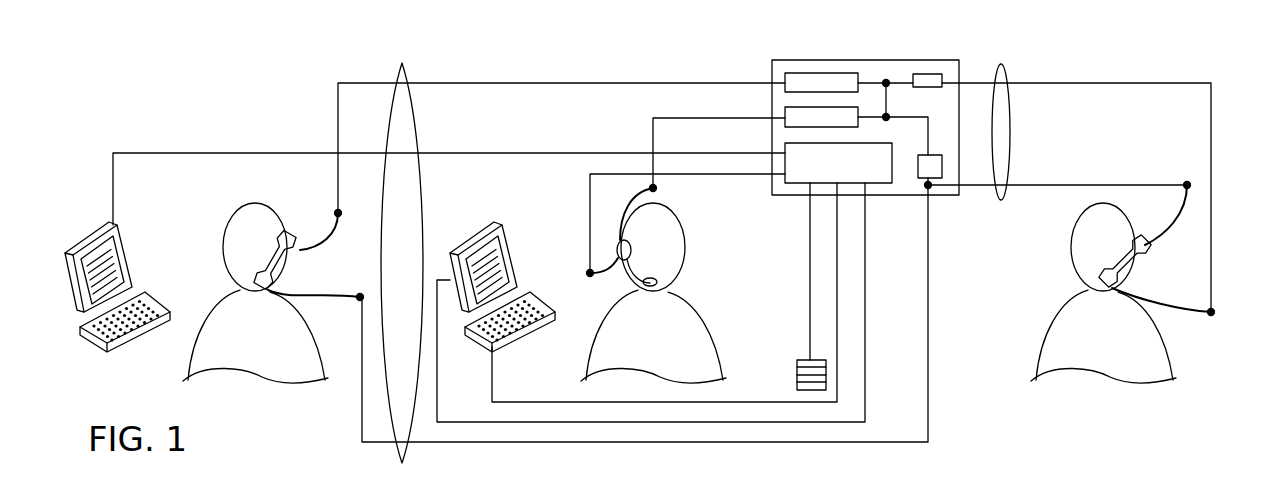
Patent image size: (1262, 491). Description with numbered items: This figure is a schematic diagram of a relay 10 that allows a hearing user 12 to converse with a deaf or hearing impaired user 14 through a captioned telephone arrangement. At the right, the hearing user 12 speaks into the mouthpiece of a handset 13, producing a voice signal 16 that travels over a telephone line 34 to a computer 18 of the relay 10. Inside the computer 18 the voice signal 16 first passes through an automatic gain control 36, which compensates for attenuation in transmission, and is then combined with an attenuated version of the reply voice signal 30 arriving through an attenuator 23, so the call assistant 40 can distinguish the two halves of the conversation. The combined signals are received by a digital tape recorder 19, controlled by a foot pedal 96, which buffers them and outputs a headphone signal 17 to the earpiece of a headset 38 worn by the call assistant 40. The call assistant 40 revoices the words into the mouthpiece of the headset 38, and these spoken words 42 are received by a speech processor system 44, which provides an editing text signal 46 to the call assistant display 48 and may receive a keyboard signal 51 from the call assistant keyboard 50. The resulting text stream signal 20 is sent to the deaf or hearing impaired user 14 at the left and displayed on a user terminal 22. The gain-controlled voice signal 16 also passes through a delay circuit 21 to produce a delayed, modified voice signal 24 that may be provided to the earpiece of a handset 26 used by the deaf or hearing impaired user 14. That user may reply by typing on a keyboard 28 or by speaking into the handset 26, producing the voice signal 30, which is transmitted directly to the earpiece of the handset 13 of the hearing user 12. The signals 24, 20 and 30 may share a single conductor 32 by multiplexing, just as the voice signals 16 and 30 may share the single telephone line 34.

The relay 10 is at (664, 68).
The hearing user 12 is at (1155, 352).
The handset 13 is at (1145, 267).
The deaf or hearing impaired user 14 is at (196, 348).
The voice signal 16 is at (1100, 83).
The headphone signal 17 is at (652, 135).
The computer 18 is at (870, 60).
The digital tape recorder 19 is at (810, 116).
The text stream signal 20 is at (457, 153).
The delay circuit 21 is at (832, 82).
The user terminal 22 is at (85, 240).
The attenuator 23 is at (942, 165).
The modified voice signal 24 is at (442, 83).
The handset 26 is at (300, 272).
The keyboard 28 is at (80, 320).
The voice signal 30 is at (370, 442).
The single conductor 32 is at (388, 412).
The single telephone line 34 is at (1001, 205).
The automatic gain control 36 is at (930, 74).
The headset 38 is at (617, 243).
The call assistant 40 is at (695, 325).
The call assistant's spoken words 42 is at (588, 178).
The speech processor system 44 is at (838, 163).
The editing text signal 46 is at (437, 372).
The call assistant display 48 is at (458, 253).
The call assistant keyboard 50 is at (475, 340).
The keyboard signal 51 is at (515, 401).
The foot pedal 96 is at (797, 380).